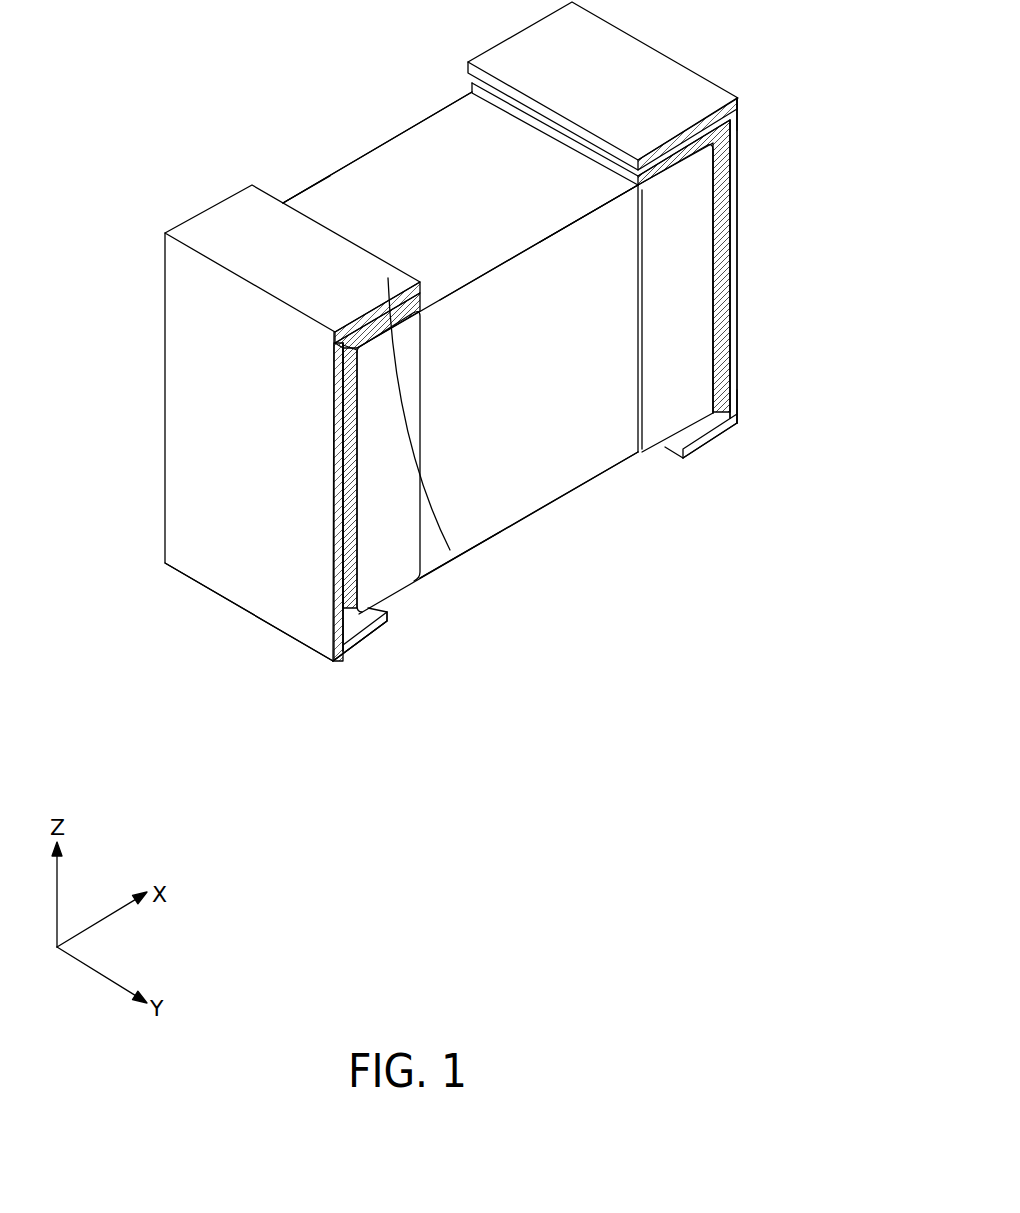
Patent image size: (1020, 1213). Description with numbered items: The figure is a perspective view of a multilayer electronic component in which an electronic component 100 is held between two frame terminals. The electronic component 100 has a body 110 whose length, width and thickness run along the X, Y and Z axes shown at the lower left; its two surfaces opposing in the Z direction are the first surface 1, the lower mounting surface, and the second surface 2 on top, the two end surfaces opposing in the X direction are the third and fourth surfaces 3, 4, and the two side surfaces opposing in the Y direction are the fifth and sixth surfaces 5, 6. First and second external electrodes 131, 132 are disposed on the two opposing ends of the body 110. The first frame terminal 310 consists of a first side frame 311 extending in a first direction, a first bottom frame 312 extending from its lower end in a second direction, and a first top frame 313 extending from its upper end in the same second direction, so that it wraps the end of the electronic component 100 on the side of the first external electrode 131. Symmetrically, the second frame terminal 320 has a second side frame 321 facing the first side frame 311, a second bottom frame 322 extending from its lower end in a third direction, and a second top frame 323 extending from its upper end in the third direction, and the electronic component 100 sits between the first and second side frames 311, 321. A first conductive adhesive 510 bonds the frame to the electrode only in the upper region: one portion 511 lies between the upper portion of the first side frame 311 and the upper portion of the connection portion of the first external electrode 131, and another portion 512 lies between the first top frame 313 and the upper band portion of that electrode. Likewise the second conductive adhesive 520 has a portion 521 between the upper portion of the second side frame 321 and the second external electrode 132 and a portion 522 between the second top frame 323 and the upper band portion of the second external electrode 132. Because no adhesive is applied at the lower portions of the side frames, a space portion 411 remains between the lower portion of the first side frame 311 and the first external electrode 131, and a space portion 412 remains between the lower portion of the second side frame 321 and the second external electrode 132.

The first surface 1 is at (487, 558).
The second surface 2 is at (441, 168).
The third surface 3 is at (208, 466).
The fourth surface 4 is at (713, 299).
The fifth surface 5 is at (566, 429).
The sixth surface 6 is at (371, 205).
The electronic component 100 is at (553, 494).
The body 110 is at (455, 505).
The first external electrode 131 is at (388, 578).
The second external electrode 132 is at (683, 460).
The first frame terminal 310 is at (193, 625).
The first side frame 311 is at (293, 622).
The first bottom frame 312 is at (357, 682).
The first top frame 313 is at (450, 550).
The second frame terminal 320 is at (829, 330).
The second side frame 321 is at (738, 340).
The second bottom frame 322 is at (736, 435).
The second top frame 323 is at (630, 127).
The space portion 411 is at (352, 533).
The space portion 412 is at (721, 325).
The first conductive adhesive 510 is at (80, 336).
The first plating connection portion 511 is at (355, 421).
The first plating band portion 512 is at (343, 335).
The second conductive adhesive 520 is at (846, 103).
The second plating connection portion 521 is at (718, 182).
The second plating band portion 522 is at (716, 115).